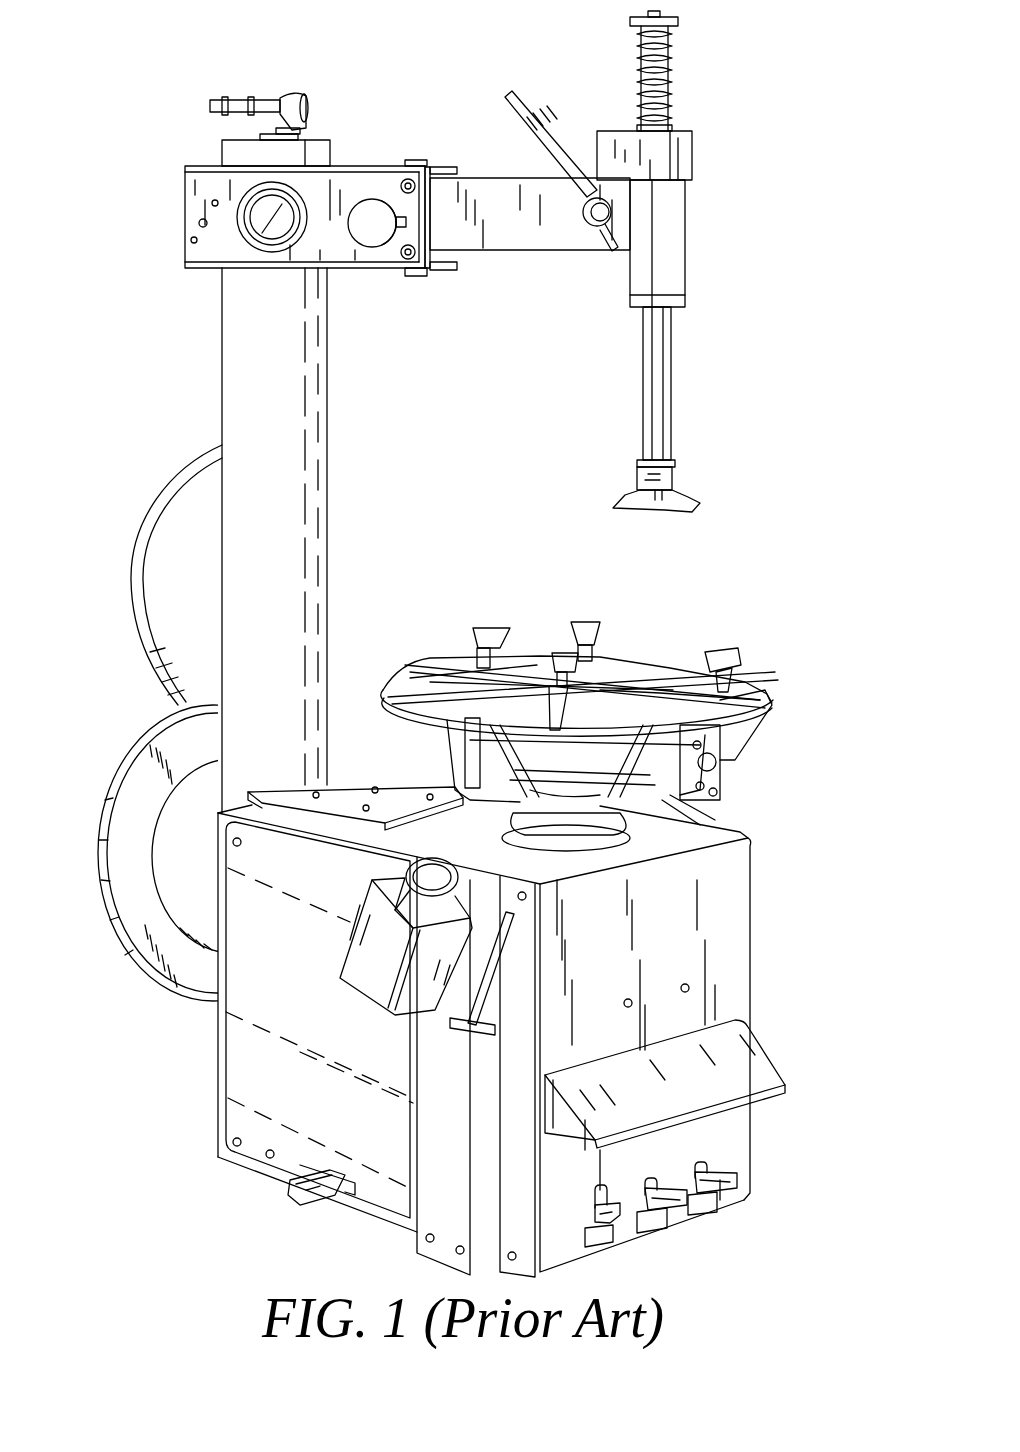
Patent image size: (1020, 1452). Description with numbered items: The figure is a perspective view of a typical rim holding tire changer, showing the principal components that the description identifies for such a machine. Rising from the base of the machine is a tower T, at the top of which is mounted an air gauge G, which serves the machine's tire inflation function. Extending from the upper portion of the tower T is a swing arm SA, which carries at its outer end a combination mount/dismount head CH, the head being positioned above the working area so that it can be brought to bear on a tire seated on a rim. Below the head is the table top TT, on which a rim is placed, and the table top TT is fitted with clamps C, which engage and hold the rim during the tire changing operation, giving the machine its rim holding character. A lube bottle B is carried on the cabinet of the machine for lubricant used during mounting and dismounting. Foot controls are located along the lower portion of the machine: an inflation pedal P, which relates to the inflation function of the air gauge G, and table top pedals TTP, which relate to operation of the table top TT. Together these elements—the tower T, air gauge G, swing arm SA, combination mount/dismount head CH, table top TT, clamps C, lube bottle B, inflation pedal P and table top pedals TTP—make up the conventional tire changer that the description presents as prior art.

The air gauge G is at (237, 190).
The swing arm SA is at (497, 247).
The combination mount/dismount head CH is at (672, 482).
The tower T is at (310, 517).
The table top TT is at (628, 665).
The clamps C is at (498, 628).
The lube bottle B is at (352, 975).
The inflation pedal P is at (286, 1195).
The table top pedals TTP is at (613, 1225).